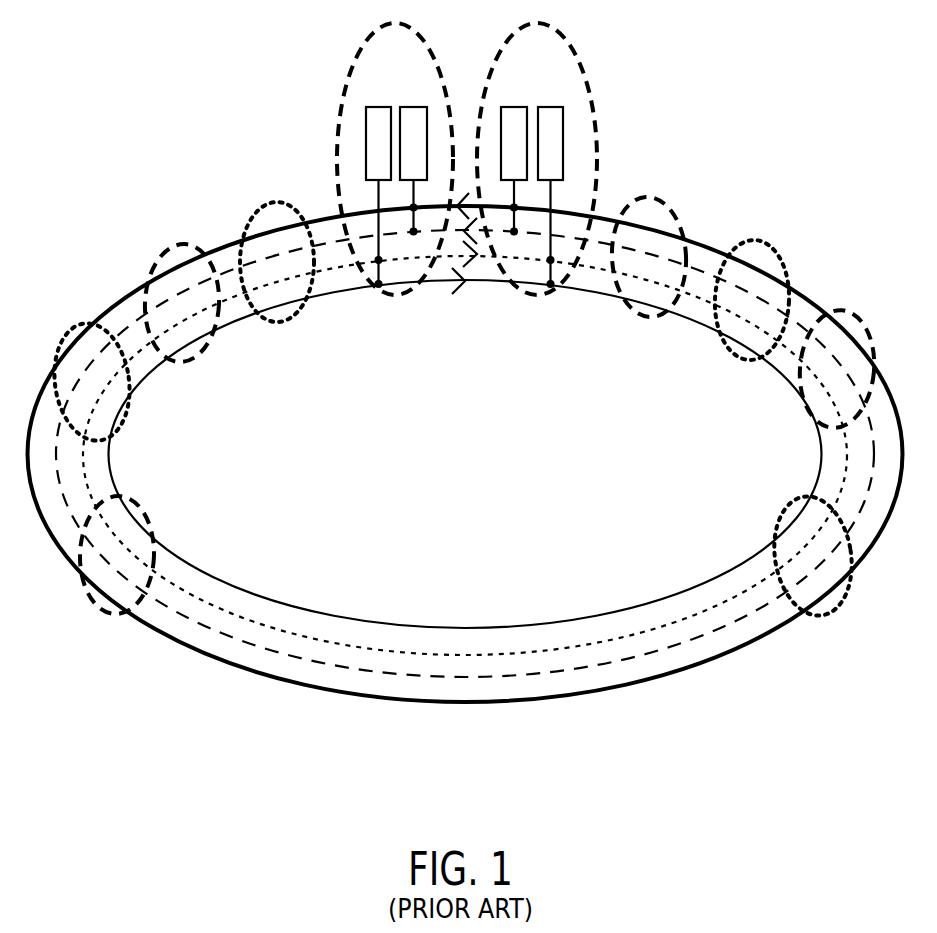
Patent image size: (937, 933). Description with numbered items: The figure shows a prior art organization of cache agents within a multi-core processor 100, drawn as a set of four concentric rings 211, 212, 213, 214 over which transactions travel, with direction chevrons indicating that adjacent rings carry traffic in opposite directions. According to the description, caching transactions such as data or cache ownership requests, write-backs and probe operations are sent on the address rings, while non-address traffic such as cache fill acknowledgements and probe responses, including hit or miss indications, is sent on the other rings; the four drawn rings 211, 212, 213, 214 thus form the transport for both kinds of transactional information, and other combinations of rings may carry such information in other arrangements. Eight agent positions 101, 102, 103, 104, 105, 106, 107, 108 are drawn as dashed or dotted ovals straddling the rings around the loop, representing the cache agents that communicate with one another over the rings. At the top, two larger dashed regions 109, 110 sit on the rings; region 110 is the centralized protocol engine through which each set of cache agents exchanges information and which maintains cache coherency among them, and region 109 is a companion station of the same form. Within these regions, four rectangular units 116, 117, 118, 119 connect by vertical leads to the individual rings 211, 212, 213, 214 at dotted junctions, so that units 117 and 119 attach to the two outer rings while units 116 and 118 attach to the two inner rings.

The ring network 100 is at (465, 448).
The network node 101 is at (134, 560).
The network node 102 is at (115, 391).
The network node 103 is at (201, 313).
The network node 104 is at (295, 276).
The network node 105 is at (669, 271).
The network node 106 is at (769, 311).
The network node 107 is at (856, 378).
The network node 108 is at (831, 563).
The add/drop station 109 is at (419, 81).
The protocol engine 110 is at (556, 81).
The transceiver unit 116 is at (347, 129).
The transceiver unit 117 is at (398, 158).
The transceiver unit 118 is at (573, 121).
The transceiver unit 119 is at (538, 151).
The inner ring fiber 211 is at (484, 478).
The ring fiber 212 is at (465, 455).
The ring fiber 213 is at (465, 455).
The outer ring fiber 214 is at (465, 454).